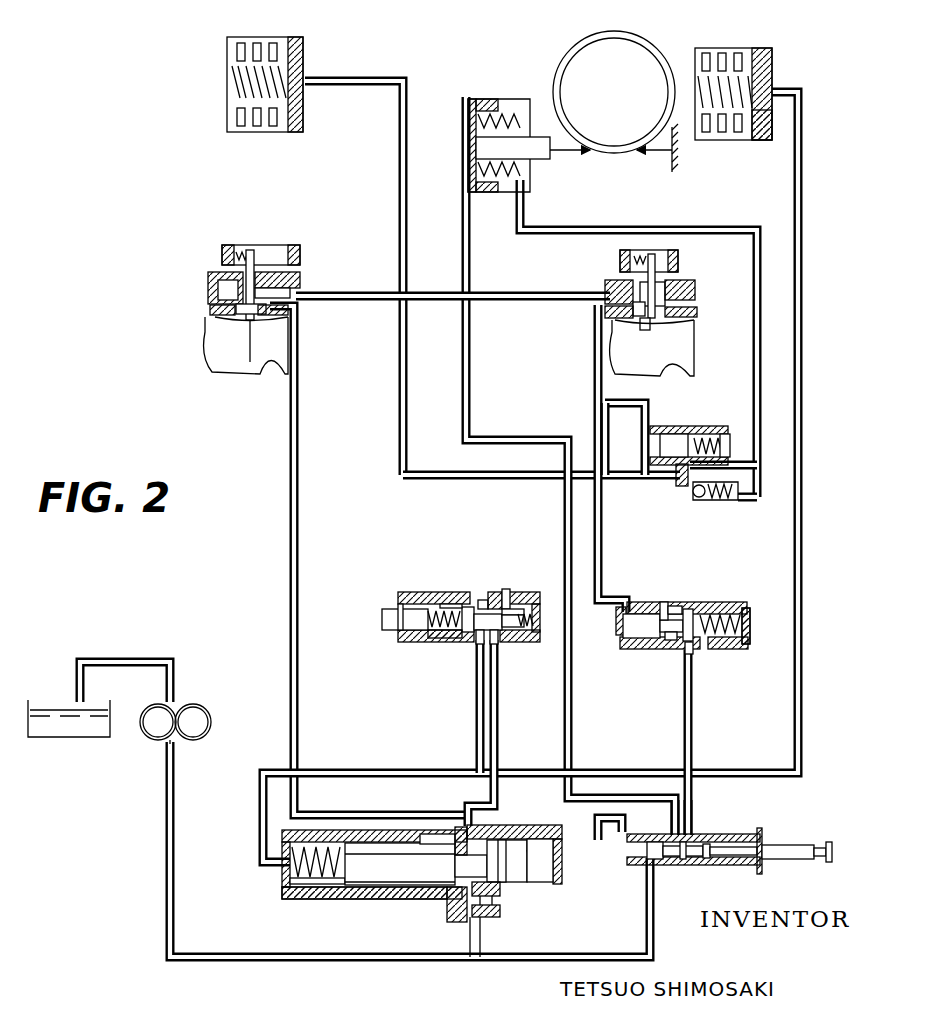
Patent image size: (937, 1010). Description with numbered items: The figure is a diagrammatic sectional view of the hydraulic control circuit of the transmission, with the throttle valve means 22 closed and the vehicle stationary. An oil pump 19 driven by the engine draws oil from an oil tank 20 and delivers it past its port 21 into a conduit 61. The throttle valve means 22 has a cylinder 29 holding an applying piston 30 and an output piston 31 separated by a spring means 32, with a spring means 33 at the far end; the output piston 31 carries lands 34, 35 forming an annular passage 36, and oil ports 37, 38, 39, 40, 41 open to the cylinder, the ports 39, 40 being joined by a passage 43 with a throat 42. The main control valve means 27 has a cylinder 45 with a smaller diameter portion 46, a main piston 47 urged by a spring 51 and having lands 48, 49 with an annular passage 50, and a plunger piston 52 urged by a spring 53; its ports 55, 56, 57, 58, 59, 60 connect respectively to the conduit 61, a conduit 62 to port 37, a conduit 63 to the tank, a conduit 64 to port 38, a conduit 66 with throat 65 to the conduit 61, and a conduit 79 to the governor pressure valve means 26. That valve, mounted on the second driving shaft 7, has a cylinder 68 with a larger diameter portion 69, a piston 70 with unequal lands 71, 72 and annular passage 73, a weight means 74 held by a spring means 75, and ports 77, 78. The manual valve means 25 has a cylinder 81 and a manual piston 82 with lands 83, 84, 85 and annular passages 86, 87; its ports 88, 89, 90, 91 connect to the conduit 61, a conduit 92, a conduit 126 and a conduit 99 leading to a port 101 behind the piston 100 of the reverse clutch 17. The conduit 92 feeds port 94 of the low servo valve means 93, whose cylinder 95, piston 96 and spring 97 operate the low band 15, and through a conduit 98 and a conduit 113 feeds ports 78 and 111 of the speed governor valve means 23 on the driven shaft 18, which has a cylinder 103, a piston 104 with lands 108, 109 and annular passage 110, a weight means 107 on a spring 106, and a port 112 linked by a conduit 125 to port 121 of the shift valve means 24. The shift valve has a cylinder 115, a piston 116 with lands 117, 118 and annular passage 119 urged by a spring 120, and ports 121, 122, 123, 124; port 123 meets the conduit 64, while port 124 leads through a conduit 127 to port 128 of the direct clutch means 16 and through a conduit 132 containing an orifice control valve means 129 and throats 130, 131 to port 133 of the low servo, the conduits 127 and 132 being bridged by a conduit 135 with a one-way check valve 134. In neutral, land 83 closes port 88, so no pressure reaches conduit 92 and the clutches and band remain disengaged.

The second driving shaft 7 is at (262, 365).
The low band 15 is at (578, 40).
The direct clutch means 16 is at (235, 35).
The reverse clutch 17 is at (733, 46).
The driven shaft 18 is at (679, 461).
The oil pump 19 is at (193, 702).
The oil tank 20 is at (72, 735).
The port of the oil pump 21 is at (165, 742).
The throttle valve means 22 is at (444, 613).
The speed governor valve means 23 is at (641, 283).
The shift valve means 24 is at (679, 630).
The manual valve means 25 is at (734, 853).
The governor pressure valve means 26 is at (238, 303).
The main control valve means 27 is at (398, 886).
The cylinder 29 is at (400, 640).
The applying piston 30 is at (382, 620).
The output piston 31 is at (462, 606).
The spring means 32 is at (435, 640).
The spring means 33 is at (538, 628).
The larger diameter land 34 is at (428, 587).
The larger diameter land 35 is at (514, 630).
The annular passage 36 is at (497, 650).
The oil port 37 is at (488, 633).
The oil port 38 is at (478, 645).
The oil port 39 is at (478, 600).
The oil port 40 is at (518, 605).
The oil port 41 is at (455, 634).
The throat 42 is at (493, 590).
The passage 43 is at (506, 587).
The cylinder 45 is at (290, 872).
The smaller diameter portion 46 is at (515, 850).
The main piston 47 is at (345, 878).
The larger diameter land 48 is at (372, 866).
The larger diameter land 49 is at (478, 853).
The annular passage 50 is at (448, 832).
The spring 51 is at (292, 882).
The plunger piston 52 is at (556, 882).
The spring 53 is at (542, 872).
The oil port 55 is at (462, 894).
The oil port 56 is at (462, 830).
The oil port 57 is at (364, 917).
The oil port 58 is at (290, 858).
The oil port 59 is at (500, 898).
The oil port 60 is at (560, 842).
The conduit 61 is at (302, 953).
The conduit 62 is at (497, 744).
The conduit 63 is at (420, 900).
The conduit 64 is at (390, 768).
The throat 65 is at (474, 950).
The conduit 66 is at (494, 915).
The cylinder 68 is at (212, 285).
The larger diameter portion 69 is at (238, 318).
The piston 70 is at (232, 305).
The larger diameter land 71 is at (263, 275).
The larger diameter land 72 is at (240, 350).
The annular passage 73 is at (246, 339).
The weight means 74 is at (258, 243).
The spring means 75 is at (226, 250).
The oil port 77 is at (300, 300).
The oil port 78 is at (278, 290).
The conduit 79 is at (298, 536).
The cylinder 81 is at (752, 858).
The manual piston 82 is at (832, 848).
The larger diameter land 83 is at (664, 858).
The larger diameter land 84 is at (707, 858).
The larger diameter land 85 is at (790, 843).
The annular passage 86 is at (683, 860).
The annular passage 87 is at (742, 860).
The oil port 88 is at (650, 858).
The oil port 89 is at (678, 828).
The port 90 is at (695, 828).
The oil port 91 is at (600, 824).
The conduit 92 is at (466, 386).
The low servo valve means 93 is at (500, 116).
The port 94 is at (462, 189).
The cylinder 95 is at (516, 97).
The piston 96 is at (486, 97).
The spring 97 is at (516, 175).
The conduit 98 is at (438, 291).
The conduit 99 is at (802, 374).
The piston 100 is at (752, 140).
The oil port 101 is at (780, 90).
The cylinder 103 is at (684, 294).
The piston 104 is at (652, 348).
The spring 106 is at (666, 240).
The weight means 107 is at (620, 265).
The larger diameter land 108 is at (642, 320).
The larger diameter land 109 is at (684, 308).
The annular passage 110 is at (682, 322).
The oil port 111 is at (614, 285).
The oil port 112 is at (608, 312).
The conduit 113 is at (508, 300).
The cylinder 115 is at (652, 640).
The piston 116 is at (660, 606).
The larger diameter land 117 is at (632, 640).
The larger diameter land 118 is at (690, 605).
The annular passage 119 is at (670, 642).
The spring 120 is at (735, 610).
The oil port 121 is at (620, 608).
The oil port 122 is at (694, 650).
The oil port 123 is at (748, 644).
The oil port 124 is at (668, 600).
The conduit 125 is at (596, 411).
The conduit 126 is at (684, 741).
The conduit 127 is at (400, 438).
The oil port 128 is at (305, 76).
The orifice control valve means 129 is at (696, 432).
The throat portion 130 is at (674, 478).
The throat portion 131 is at (740, 463).
The conduit 132 is at (755, 365).
The oil port 133 is at (522, 194).
The one-way check valve 134 is at (712, 500).
The conduit 135 is at (760, 480).